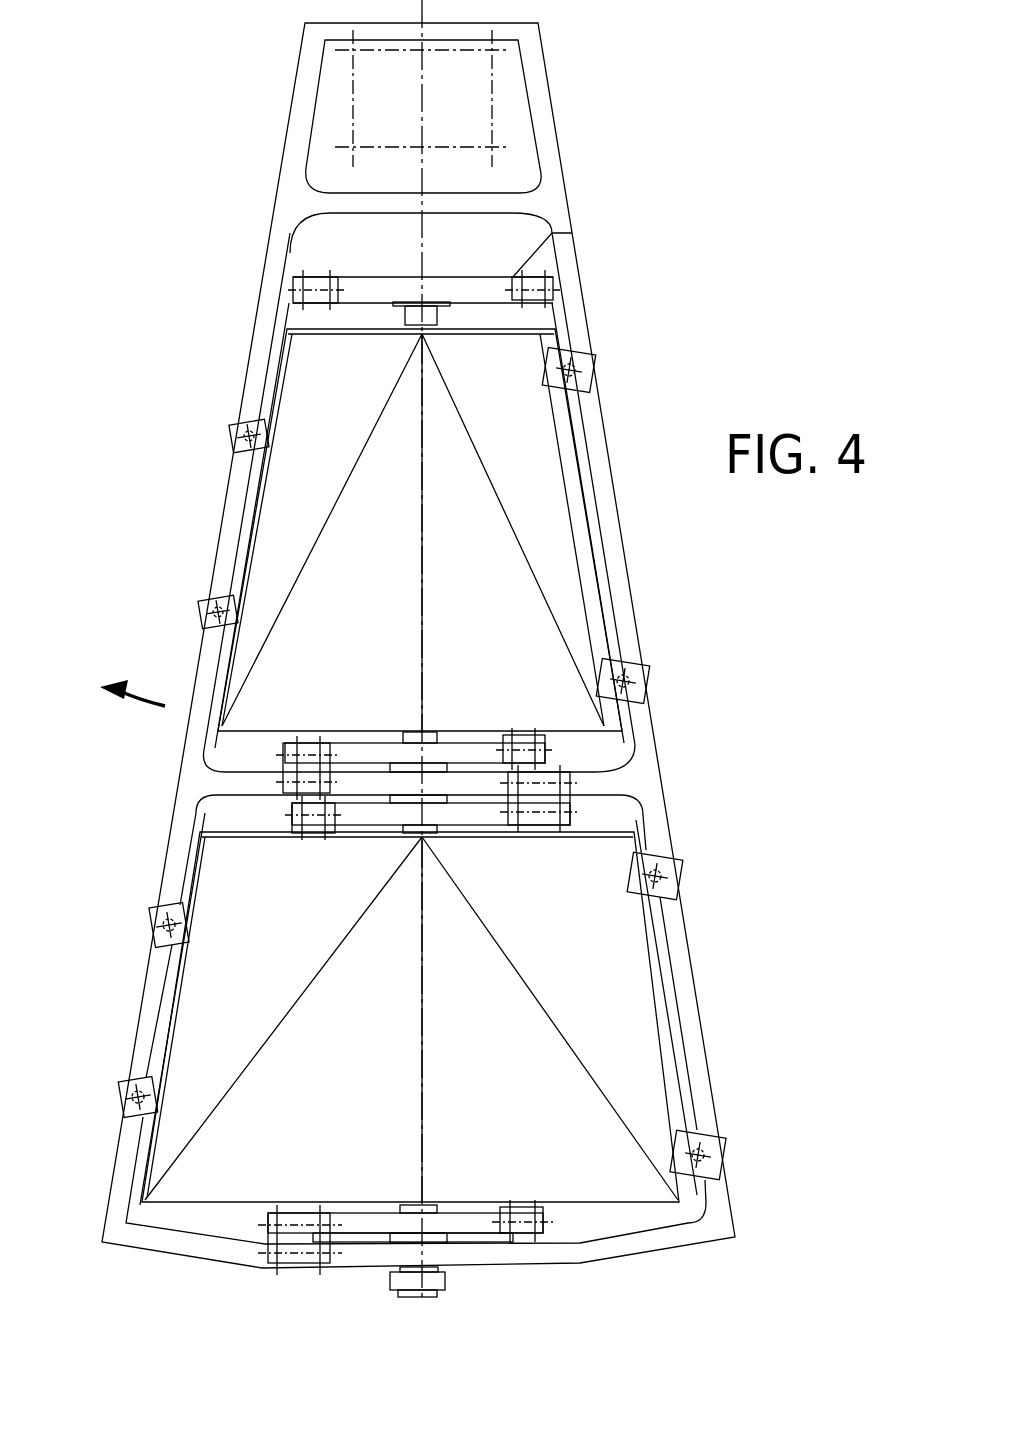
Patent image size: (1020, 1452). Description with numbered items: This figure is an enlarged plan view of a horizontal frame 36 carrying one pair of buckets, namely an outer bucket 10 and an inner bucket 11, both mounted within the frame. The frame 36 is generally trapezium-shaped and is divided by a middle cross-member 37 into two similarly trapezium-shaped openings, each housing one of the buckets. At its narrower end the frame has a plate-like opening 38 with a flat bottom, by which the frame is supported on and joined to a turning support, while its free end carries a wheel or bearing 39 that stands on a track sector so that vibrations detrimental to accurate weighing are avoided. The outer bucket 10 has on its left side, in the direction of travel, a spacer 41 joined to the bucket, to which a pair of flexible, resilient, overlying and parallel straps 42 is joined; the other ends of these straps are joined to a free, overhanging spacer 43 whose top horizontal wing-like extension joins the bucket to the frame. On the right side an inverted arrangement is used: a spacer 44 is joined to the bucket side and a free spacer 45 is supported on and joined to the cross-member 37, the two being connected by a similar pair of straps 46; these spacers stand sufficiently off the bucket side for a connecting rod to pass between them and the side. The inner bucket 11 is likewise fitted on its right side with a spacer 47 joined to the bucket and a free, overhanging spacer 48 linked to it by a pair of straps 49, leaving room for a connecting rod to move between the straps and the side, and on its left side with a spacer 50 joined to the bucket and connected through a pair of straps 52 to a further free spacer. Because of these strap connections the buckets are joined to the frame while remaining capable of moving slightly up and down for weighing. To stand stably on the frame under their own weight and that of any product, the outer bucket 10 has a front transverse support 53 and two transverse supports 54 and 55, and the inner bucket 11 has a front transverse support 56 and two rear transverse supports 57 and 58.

The outer bucket 10 is at (620, 975).
The inner bucket 11 is at (565, 552).
The horizontal frame 36 is at (150, 838).
The middle cross-member 37 is at (600, 786).
The plate-like opening 38 is at (510, 114).
The wheel or bearing 39 is at (440, 1280).
The spacer 41 is at (520, 1232).
The straps 42 is at (360, 1222).
The spacer 43 is at (290, 1250).
The spacer 44 is at (315, 832).
The spacer 45 is at (538, 810).
The straps 46 is at (473, 812).
The spacer 47 is at (312, 302).
The spacer 48 is at (535, 290).
The straps 49 is at (463, 290).
The spacer 50 is at (520, 742).
The straps 52 is at (470, 742).
The front transverse support 53 is at (160, 1012).
The transverse support 54 is at (303, 748).
The transverse support 55 is at (713, 1142).
The front transverse support 56 is at (228, 512).
The rear transverse support 57 is at (592, 372).
The rear transverse support 58 is at (630, 668).